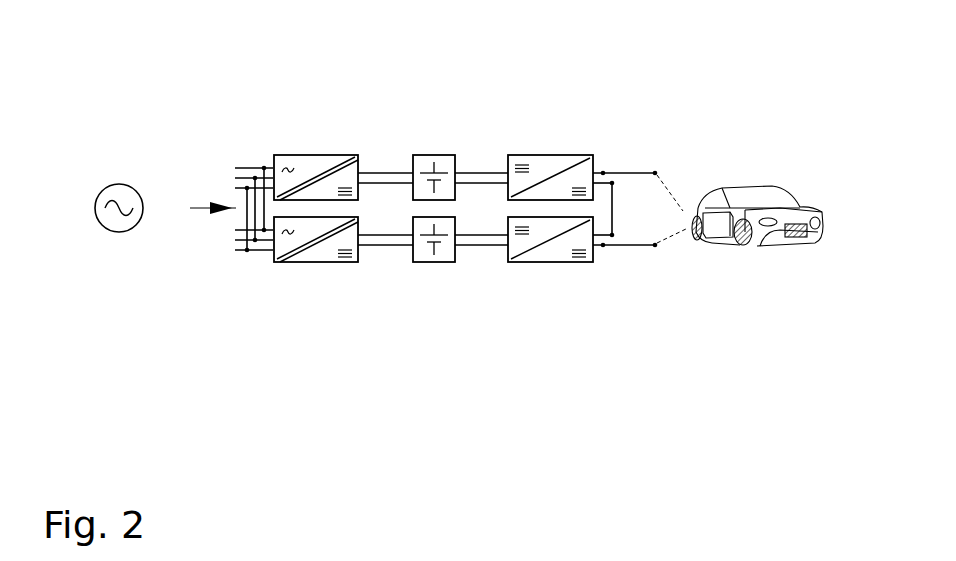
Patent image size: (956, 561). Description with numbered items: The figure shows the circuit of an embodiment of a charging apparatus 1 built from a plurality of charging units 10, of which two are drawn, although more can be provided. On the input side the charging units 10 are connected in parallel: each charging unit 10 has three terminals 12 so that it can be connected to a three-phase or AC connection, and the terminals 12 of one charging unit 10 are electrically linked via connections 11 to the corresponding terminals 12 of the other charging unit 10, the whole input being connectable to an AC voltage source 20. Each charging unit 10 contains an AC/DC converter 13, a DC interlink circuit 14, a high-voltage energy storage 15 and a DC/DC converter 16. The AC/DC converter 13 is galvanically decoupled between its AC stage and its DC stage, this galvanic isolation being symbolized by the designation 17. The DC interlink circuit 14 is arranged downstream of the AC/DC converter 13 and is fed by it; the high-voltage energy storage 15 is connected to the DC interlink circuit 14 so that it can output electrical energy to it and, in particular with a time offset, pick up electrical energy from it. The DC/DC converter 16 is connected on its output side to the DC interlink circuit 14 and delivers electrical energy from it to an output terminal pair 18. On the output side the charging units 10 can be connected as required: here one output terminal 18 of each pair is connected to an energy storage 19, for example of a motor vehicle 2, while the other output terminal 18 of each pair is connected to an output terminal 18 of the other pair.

The charging apparatus 1 is at (760, 94).
The motor vehicle 2 is at (783, 215).
The charging unit 10 is at (518, 128).
The connection 11 is at (200, 208).
The terminal 12 is at (229, 163).
The AC/DC converter 13 is at (305, 163).
The DC interlink circuit 14 is at (371, 173).
The high-voltage energy storage 15 is at (453, 156).
The DC/DC converter 16 is at (550, 162).
The galvanic isolation 17 is at (338, 166).
The output terminal 18 is at (613, 182).
The energy storage 19 is at (710, 217).
The AC voltage source 20 is at (118, 185).